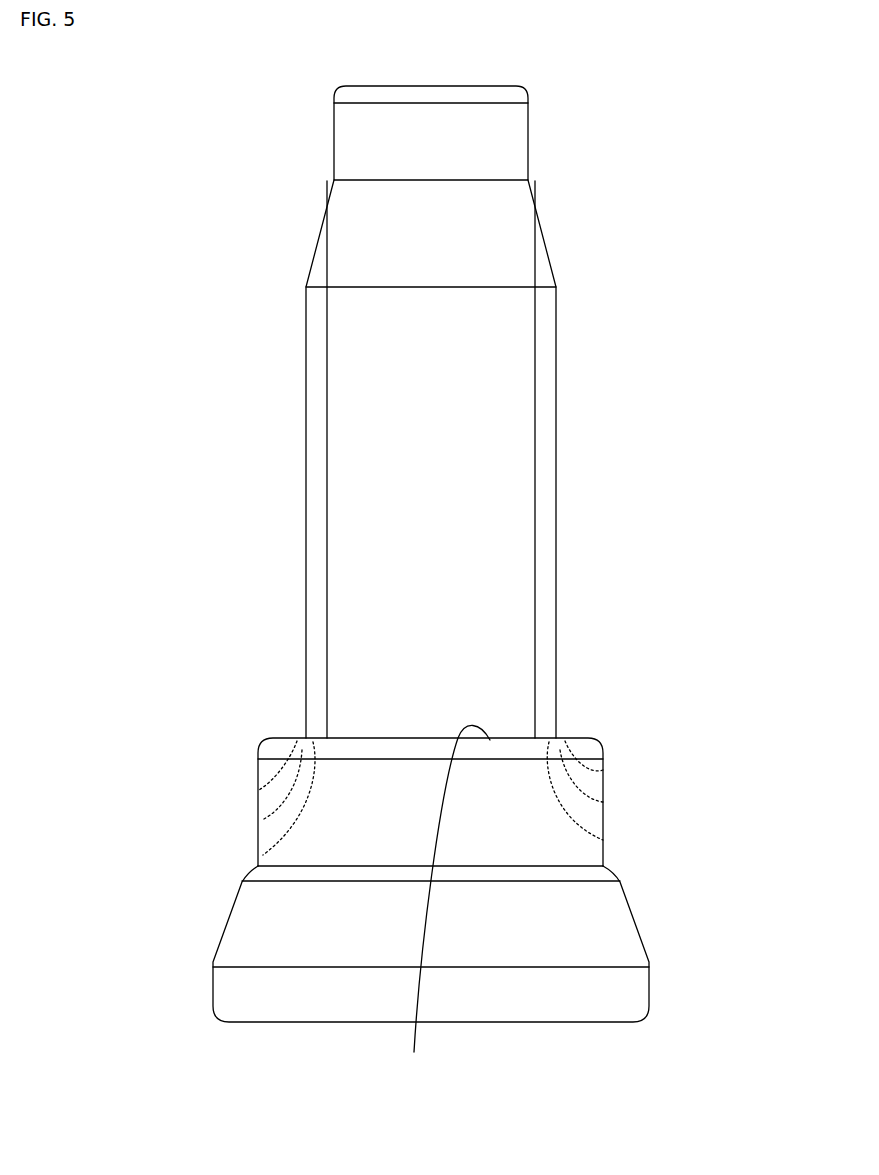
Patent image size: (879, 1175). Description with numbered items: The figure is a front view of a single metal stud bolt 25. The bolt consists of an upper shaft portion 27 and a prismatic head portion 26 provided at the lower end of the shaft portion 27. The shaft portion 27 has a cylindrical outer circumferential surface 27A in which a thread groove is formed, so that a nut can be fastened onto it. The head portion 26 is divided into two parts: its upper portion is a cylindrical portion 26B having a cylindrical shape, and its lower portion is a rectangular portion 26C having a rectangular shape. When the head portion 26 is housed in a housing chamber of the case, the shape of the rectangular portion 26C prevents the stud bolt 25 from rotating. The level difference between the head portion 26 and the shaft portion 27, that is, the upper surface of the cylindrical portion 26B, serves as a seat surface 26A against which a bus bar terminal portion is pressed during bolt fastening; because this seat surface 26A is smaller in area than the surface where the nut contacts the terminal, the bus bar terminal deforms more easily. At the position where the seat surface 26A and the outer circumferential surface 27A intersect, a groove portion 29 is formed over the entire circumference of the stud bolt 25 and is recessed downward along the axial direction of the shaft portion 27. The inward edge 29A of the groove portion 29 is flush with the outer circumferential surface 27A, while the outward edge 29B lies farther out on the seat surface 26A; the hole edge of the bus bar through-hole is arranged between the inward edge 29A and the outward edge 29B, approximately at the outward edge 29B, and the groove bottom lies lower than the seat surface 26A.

The stud bolt 25 is at (481, 584).
The head portion 26 is at (473, 896).
The seat surface 26A is at (443, 903).
The cylindrical portion 26B is at (604, 852).
The rectangular portion 26C is at (650, 985).
The shaft portion 27 is at (455, 412).
The outer circumferential surface 27A is at (306, 662).
The groove portion 29 is at (446, 804).
The inward edge 29A is at (263, 855).
The outward edge 29B is at (258, 793).